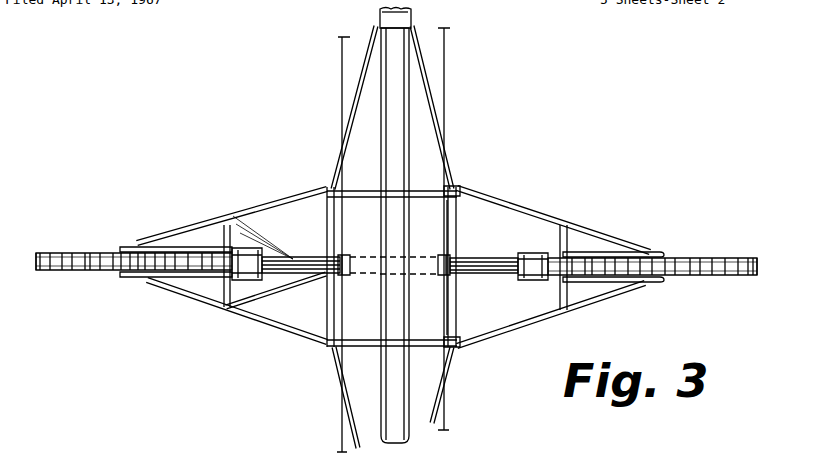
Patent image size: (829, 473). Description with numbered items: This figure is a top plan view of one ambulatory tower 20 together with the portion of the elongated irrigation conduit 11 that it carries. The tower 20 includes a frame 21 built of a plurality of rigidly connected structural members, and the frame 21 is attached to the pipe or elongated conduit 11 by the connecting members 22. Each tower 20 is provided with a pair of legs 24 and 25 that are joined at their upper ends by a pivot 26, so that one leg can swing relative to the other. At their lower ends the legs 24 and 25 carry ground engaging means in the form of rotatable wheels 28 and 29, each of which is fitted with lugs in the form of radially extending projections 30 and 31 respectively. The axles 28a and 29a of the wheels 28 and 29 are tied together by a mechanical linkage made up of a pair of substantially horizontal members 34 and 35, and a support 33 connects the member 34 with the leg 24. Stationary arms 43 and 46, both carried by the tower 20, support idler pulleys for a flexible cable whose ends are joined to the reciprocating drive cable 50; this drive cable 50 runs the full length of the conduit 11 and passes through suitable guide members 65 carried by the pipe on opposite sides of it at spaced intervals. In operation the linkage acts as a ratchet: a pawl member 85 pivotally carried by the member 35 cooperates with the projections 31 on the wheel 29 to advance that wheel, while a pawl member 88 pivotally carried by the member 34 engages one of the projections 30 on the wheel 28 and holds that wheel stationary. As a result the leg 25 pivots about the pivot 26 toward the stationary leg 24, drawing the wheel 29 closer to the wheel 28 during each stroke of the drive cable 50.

The elongated conduit 11 is at (408, 431).
The ambulatory tower 20 is at (321, 150).
The frame 21 is at (428, 191).
The members 22 is at (379, 17).
The leg 24 is at (247, 211).
The leg 25 is at (550, 213).
The pivot 26 is at (457, 312).
The wheel 28 is at (80, 253).
The axle 28a is at (133, 277).
The wheel 29 is at (727, 260).
The axle 29a is at (650, 252).
The projections 30 is at (62, 258).
The projections 31 is at (695, 268).
The support 33 is at (258, 297).
The horizontal member 34 is at (315, 275).
The horizontal member 35 is at (508, 279).
The stationary arm 43 is at (309, 256).
The stationary arm 46 is at (490, 258).
The reciprocating drive cable 50 is at (445, 100).
The guide members 65 is at (350, 256).
The pawl member 85 is at (545, 258).
The pawl member 88 is at (247, 253).